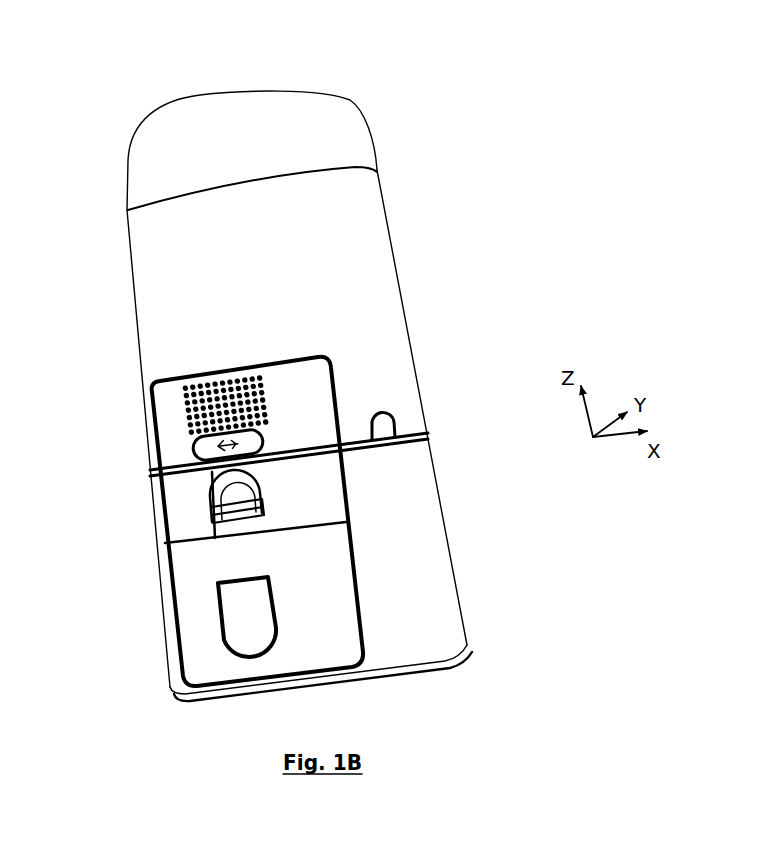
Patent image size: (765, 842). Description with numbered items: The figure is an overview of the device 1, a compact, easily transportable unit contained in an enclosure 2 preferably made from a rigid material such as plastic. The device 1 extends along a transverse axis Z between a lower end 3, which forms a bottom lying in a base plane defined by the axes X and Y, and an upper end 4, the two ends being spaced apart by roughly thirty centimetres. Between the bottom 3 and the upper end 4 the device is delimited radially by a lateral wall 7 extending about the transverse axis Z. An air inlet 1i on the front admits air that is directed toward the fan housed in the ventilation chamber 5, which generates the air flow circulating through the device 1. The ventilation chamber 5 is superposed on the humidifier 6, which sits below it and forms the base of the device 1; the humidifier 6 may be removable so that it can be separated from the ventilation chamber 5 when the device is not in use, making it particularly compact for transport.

The device 1 is at (355, 372).
The air inlet 1i is at (225, 372).
The enclosure 2 is at (352, 151).
The lower end 3 is at (440, 668).
The upper end 4 is at (240, 95).
The ventilation chamber 5 is at (368, 299).
The humidifier 6 is at (432, 470).
The lateral wall 7 is at (392, 223).